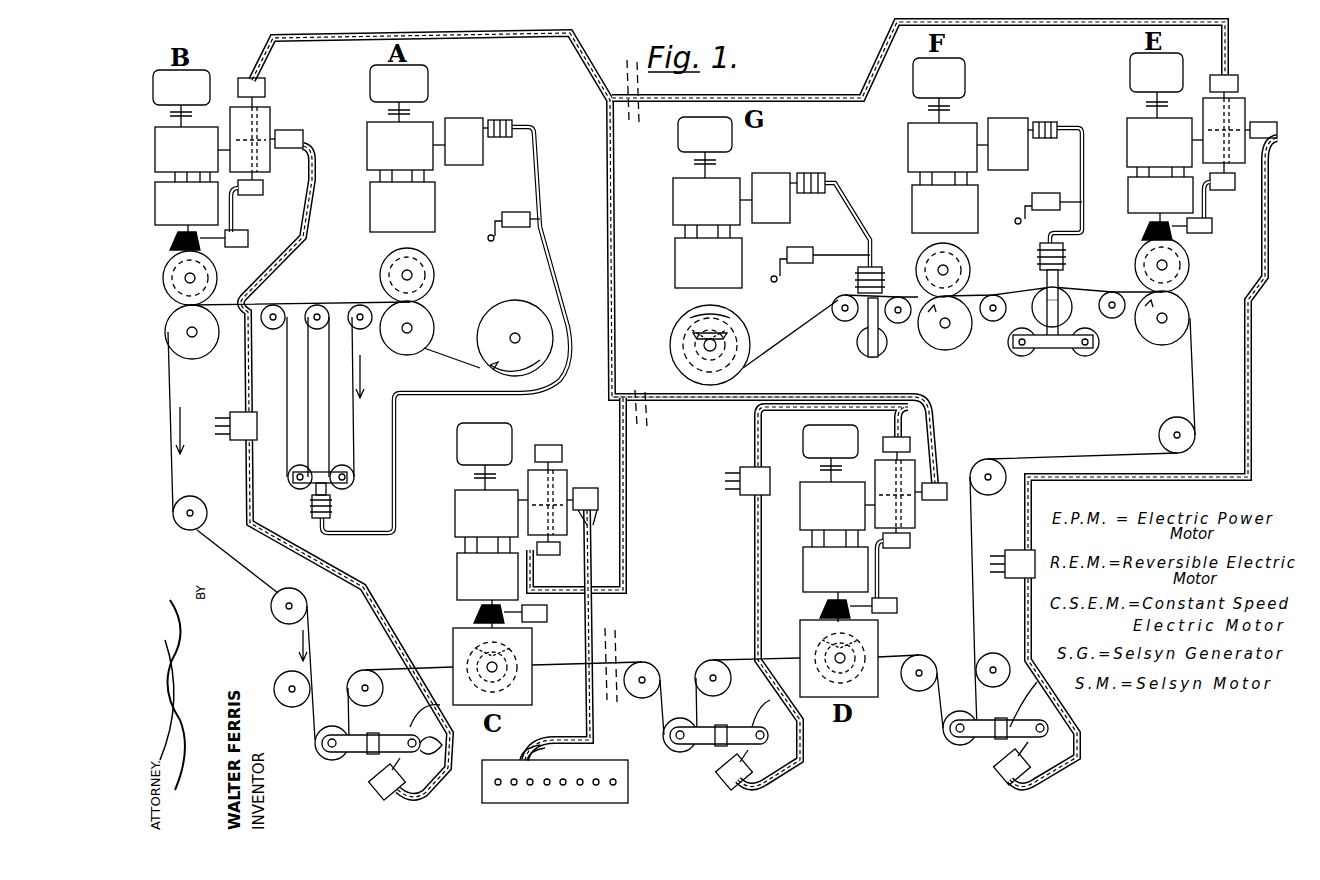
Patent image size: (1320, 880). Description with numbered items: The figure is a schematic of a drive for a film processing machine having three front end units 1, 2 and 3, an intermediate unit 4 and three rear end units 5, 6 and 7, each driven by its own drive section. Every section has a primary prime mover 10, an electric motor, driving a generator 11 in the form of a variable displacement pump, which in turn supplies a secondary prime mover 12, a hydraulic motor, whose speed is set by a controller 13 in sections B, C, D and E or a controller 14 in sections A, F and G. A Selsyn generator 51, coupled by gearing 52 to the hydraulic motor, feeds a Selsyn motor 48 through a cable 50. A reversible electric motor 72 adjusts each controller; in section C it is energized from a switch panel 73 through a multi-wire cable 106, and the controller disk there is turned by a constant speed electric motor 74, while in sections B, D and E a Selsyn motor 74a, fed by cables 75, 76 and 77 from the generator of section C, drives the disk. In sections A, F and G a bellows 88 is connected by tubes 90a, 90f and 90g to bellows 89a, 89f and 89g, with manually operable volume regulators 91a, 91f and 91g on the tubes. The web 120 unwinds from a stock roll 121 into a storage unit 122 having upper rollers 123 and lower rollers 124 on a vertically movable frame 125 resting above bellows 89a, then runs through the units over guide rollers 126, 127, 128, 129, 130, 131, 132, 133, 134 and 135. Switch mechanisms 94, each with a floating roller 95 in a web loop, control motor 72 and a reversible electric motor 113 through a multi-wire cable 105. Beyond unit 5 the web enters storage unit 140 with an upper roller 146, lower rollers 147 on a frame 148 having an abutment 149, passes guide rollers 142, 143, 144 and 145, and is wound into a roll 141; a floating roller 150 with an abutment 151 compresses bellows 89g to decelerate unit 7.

The front end unit 1 is at (445, 258).
The front end unit 2 is at (160, 290).
The front end unit 3 is at (545, 665).
The intermediate unit 4 is at (915, 615).
The rear end unit 5 is at (1200, 250).
The rear end unit 6 is at (980, 252).
The rear end unit 7 is at (672, 325).
The primary prime mover 10 is at (678, 137).
The generator 11 is at (673, 327).
The secondary prime mover 12 is at (674, 383).
The controller 13 is at (731, 316).
The controller 14 is at (730, 170).
The Selsyn motor 48 is at (263, 188).
The cable 50 is at (233, 212).
The Selsyn generator 51 is at (248, 242).
The gearing 52 is at (172, 244).
The reversible electric motor 72 is at (773, 311).
The switch panel 73 is at (585, 798).
The constant speed electric motor 74 is at (542, 451).
The Selsyn motor 74a is at (1214, 77).
The cable 75 is at (628, 470).
The cable 76 is at (722, 402).
The cable 77 is at (836, 96).
The bellows 88 is at (497, 120).
The bellows 89a is at (330, 510).
The bellows 89f is at (1063, 258).
The bellows 89g is at (858, 283).
The tube 90a is at (562, 250).
The tube 90f is at (1080, 158).
The tube 90g is at (850, 214).
The volume regulator 91a is at (516, 212).
The volume regulator 91f is at (1048, 193).
The volume regulator 91g is at (803, 247).
The switch mechanism 94 is at (665, 751).
The floating roller 95 is at (338, 733).
The multi-wire cable 105 is at (370, 593).
The multi-wire cable 106 is at (594, 614).
The reversible electric motor 113 is at (388, 795).
The web 120 is at (470, 352).
The stock roll 121 is at (505, 310).
The storage unit 122 is at (316, 292).
The upper rollers 123 is at (352, 306).
The lower rollers 124 is at (292, 484).
The vertically movable frame 125 is at (314, 485).
The guide roller 126 is at (193, 500).
The guide roller 127 is at (300, 616).
The guide roller 128 is at (290, 676).
The guide roller 129 is at (362, 674).
The guide roller 130 is at (644, 672).
The guide roller 131 is at (708, 668).
The guide roller 132 is at (916, 682).
The guide roller 133 is at (992, 662).
The guide roller 134 is at (990, 470).
The guide roller 135 is at (1162, 434).
The storage unit 140 is at (1065, 336).
The roll 141 is at (735, 332).
The guide roller 142 is at (1120, 316).
The guide roller 143 is at (988, 322).
The guide roller 144 is at (898, 323).
The guide roller 145 is at (842, 322).
The upper roller 146 is at (1062, 300).
The lower rollers 147 is at (1028, 349).
The vertically movable frame 148 is at (1096, 349).
The abutment 149 is at (1047, 287).
The floating roller 150 is at (880, 355).
The abutment 151 is at (891, 334).